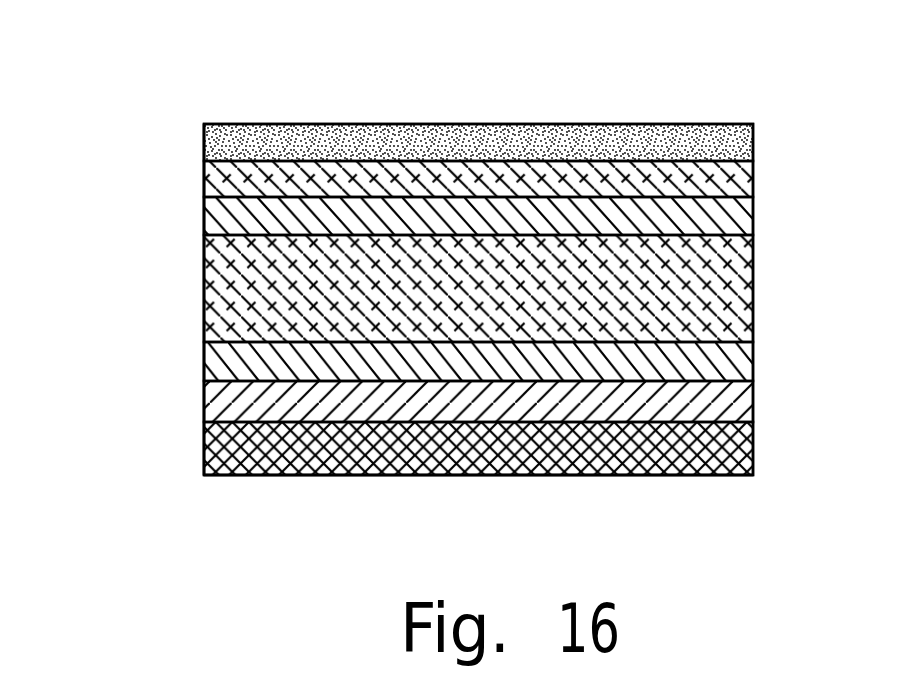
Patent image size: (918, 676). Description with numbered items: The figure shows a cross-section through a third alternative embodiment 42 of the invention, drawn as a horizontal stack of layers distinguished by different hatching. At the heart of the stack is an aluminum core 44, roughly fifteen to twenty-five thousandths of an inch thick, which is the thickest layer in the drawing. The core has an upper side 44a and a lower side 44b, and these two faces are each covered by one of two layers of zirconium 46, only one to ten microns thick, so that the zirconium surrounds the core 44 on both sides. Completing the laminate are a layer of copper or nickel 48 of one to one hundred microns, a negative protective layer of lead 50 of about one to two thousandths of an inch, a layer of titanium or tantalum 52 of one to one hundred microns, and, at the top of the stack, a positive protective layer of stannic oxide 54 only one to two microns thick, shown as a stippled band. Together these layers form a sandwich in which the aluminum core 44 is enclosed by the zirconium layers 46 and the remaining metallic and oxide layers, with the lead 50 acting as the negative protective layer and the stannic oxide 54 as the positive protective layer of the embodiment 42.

The third alternative embodiment 42 is at (466, 100).
The aluminum core 44 is at (204, 300).
The upper side of the core 44a is at (204, 218).
The lower side of the core 44b is at (204, 357).
The layers of zirconium 46 is at (204, 202).
The layer of copper or nickel 48 is at (204, 404).
The negative protective layer of lead 50 is at (360, 476).
The layer of titanium or tantalum 52 is at (204, 177).
The positive protective layer of stannic oxide 54 is at (386, 124).